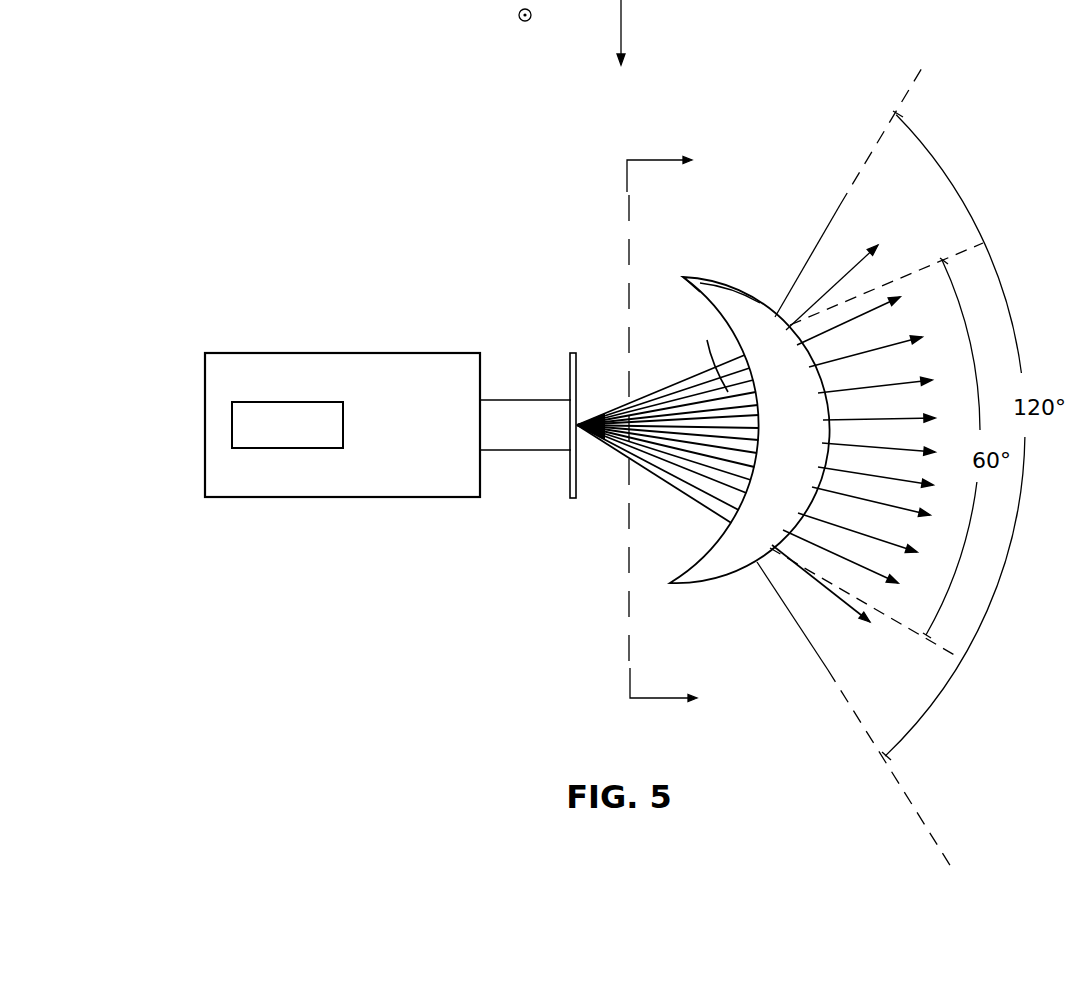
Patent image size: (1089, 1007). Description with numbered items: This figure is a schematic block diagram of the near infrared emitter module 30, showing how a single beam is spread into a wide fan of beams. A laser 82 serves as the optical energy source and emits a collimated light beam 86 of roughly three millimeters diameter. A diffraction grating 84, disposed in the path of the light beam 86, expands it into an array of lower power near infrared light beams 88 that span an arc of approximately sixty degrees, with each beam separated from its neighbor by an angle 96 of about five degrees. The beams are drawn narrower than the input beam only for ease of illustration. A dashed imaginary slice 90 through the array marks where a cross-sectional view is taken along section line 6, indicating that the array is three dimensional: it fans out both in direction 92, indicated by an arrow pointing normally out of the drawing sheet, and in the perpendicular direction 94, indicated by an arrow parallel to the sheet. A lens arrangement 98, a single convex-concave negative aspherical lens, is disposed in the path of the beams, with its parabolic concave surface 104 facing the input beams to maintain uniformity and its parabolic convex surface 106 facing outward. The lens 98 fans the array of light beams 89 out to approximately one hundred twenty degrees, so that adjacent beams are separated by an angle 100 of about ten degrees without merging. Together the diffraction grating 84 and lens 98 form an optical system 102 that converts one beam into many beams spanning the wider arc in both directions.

The emitter module 30 is at (420, 182).
The laser 82 is at (352, 497).
The diffraction grating 84 is at (568, 498).
The collimated light beam 86 is at (518, 423).
The light beams 88 is at (653, 390).
The light beams 89 is at (831, 594).
The imaginary slice 90 is at (630, 560).
The direction arrow 92 is at (517, 17).
The direction arrow 94 is at (623, 19).
The angle 96 is at (718, 368).
The lens arrangement 98 is at (722, 562).
The angle 100 is at (832, 287).
The optical system 102 is at (565, 641).
The concave surface 104 is at (697, 292).
The convex surface 106 is at (747, 297).
The section line 6- 6 is at (673, 433).